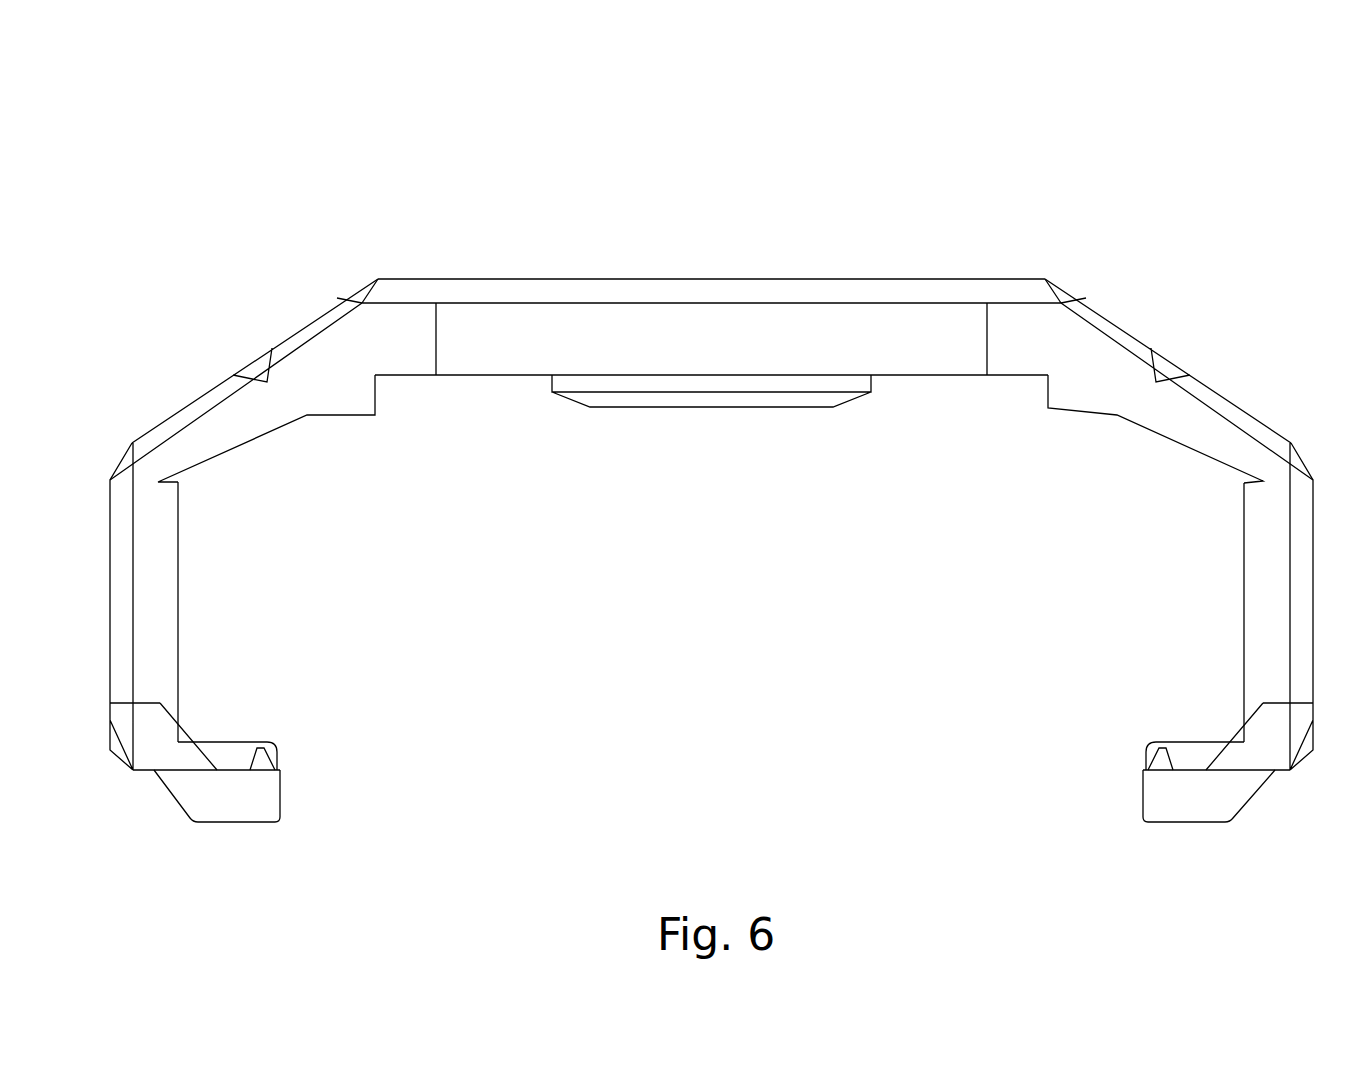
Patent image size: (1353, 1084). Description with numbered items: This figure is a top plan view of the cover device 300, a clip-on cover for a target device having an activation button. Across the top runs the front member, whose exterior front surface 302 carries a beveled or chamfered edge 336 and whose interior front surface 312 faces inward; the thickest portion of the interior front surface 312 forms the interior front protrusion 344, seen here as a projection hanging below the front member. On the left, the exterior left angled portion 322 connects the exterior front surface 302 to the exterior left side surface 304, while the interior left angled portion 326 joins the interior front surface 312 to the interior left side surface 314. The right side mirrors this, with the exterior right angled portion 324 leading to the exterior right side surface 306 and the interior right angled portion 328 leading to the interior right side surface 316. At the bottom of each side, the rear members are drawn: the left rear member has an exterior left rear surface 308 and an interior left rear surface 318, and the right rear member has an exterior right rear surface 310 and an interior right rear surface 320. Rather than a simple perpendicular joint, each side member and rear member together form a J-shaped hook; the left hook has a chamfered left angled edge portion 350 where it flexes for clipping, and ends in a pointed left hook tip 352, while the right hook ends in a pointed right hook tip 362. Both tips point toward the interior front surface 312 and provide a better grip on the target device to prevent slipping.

The cover device 300 is at (190, 76).
The exterior front surface 302 is at (711, 338).
The exterior left side surface 304 is at (109, 547).
The exterior right side surface 306 is at (1314, 536).
The exterior left rear surface 308 is at (234, 830).
The exterior right rear surface 310 is at (1187, 832).
The interior front surface 312 is at (938, 379).
The interior left side surface 314 is at (182, 642).
The interior right side surface 316 is at (1241, 658).
The interior left rear surface 318 is at (229, 768).
The interior right rear surface 320 is at (1187, 768).
The exterior left angled portion 322 is at (289, 346).
The exterior right angled portion 324 is at (1141, 337).
The interior left angled portion 326 is at (301, 432).
The interior right angled portion 328 is at (1124, 429).
The chamfered edge 336 is at (807, 288).
The interior front protrusion 344 is at (640, 403).
The left angled edge portion 350 is at (173, 757).
The left hook tip 352 is at (265, 760).
The right hook tip 362 is at (1160, 760).